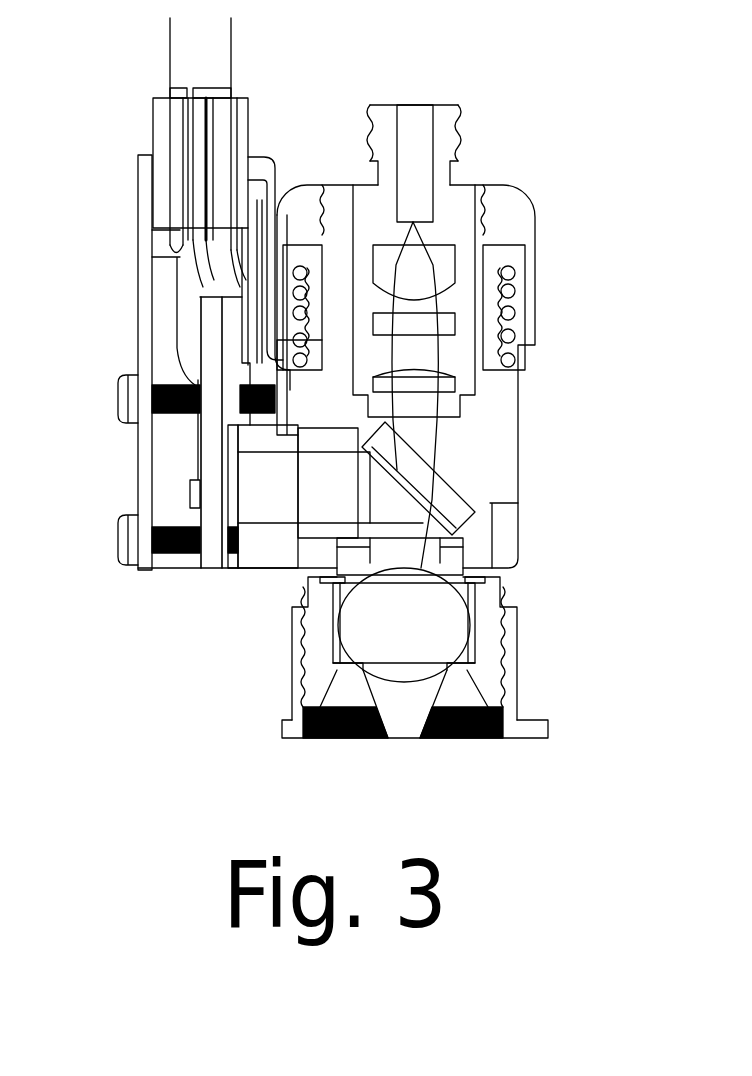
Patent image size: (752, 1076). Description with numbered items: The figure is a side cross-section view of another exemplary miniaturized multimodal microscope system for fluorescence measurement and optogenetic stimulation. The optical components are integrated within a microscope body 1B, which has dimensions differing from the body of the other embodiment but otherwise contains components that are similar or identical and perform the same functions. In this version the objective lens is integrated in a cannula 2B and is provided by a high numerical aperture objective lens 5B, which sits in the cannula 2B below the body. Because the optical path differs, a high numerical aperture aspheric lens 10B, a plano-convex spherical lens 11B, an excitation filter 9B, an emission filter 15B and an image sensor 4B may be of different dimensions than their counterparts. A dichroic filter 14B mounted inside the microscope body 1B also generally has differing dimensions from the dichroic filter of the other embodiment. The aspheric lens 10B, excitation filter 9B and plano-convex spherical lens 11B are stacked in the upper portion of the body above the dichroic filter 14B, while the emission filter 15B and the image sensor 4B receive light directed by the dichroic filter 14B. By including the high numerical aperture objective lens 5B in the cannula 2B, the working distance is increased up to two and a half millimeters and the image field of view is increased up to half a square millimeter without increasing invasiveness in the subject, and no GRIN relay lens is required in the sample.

The microscope body 1B is at (500, 475).
The cannula 2B is at (465, 690).
The image sensor 4B is at (233, 498).
The high numerical aperture objective lens 5B is at (478, 617).
The excitation filter 9B is at (455, 327).
The high numerical aperture aspheric lens 10B is at (455, 265).
The plano-convex spherical lens 11B is at (455, 385).
The dichroic filter 14B is at (440, 500).
The emission filter 15B is at (315, 537).